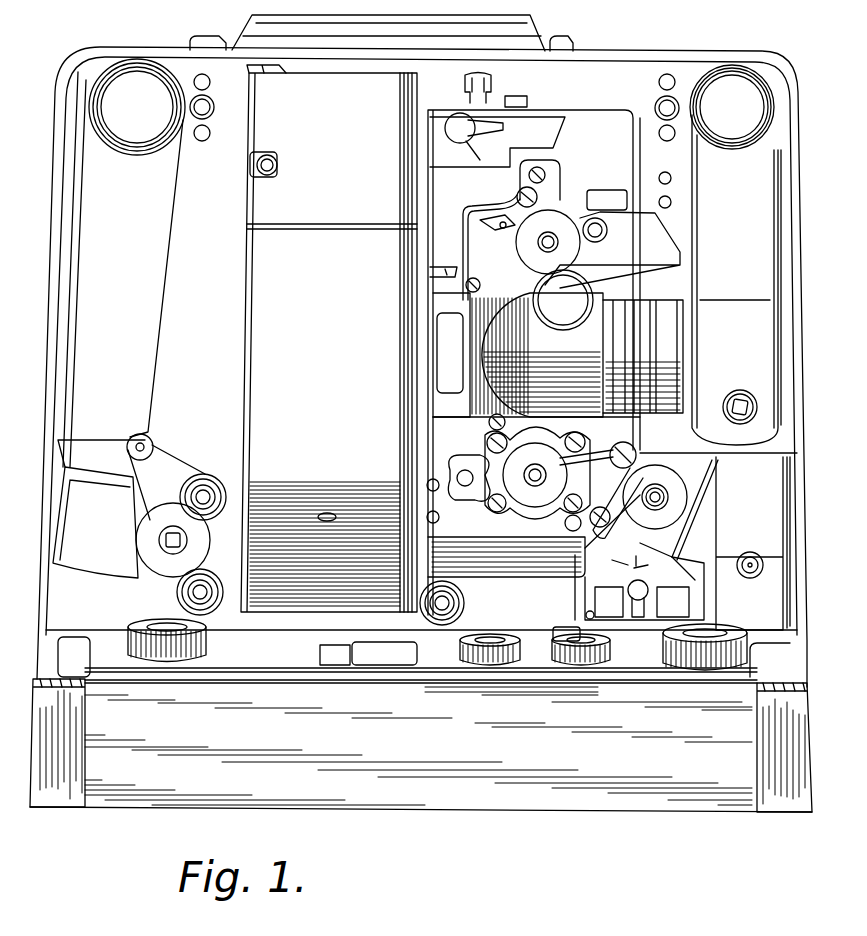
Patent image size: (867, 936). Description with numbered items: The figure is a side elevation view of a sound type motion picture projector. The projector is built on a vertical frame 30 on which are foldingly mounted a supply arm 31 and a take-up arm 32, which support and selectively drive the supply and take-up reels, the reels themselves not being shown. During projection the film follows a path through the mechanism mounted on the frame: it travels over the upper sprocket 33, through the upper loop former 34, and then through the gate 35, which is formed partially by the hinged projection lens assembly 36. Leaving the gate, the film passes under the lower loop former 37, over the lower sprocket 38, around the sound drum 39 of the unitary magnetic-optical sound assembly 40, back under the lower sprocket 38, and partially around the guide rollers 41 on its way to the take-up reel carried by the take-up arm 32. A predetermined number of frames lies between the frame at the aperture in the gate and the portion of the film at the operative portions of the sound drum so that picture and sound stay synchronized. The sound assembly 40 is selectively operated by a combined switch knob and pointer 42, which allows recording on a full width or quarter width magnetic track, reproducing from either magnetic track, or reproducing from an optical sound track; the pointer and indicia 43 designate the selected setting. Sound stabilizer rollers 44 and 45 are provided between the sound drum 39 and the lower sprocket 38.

The vertical frame 30 is at (590, 91).
The supply arm 31 is at (744, 275).
The take-up arm 32 is at (133, 249).
The upper sprocket 33 is at (548, 218).
The upper loop former 34 is at (473, 209).
The gate 35 is at (466, 286).
The hinged projection lens assembly 36 is at (562, 360).
The lower loop former 37 is at (463, 500).
The lower sprocket 38 is at (547, 463).
The sound drum 39 is at (667, 483).
The unitary magnetic-optical sound assembly 40 is at (558, 600).
The guide rollers 41 is at (205, 480).
The combined switch knob and pointer 42 is at (638, 617).
The indicia 43 is at (702, 579).
The sound stabilizer roller 44 is at (635, 449).
The sound stabilizer roller 45 is at (565, 527).